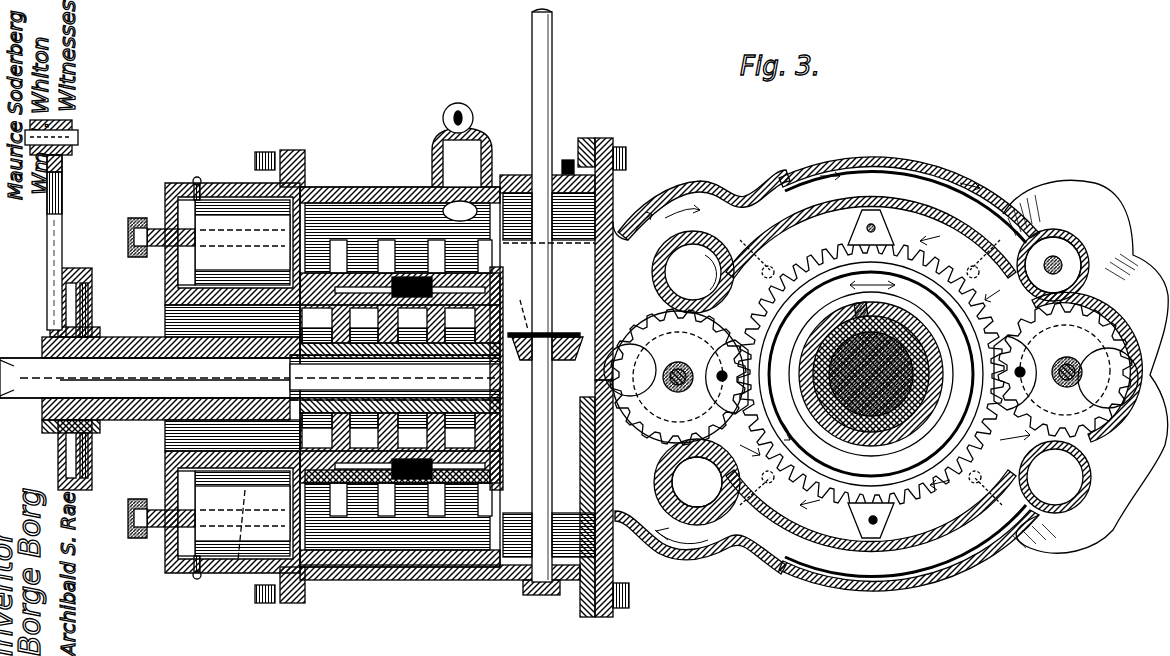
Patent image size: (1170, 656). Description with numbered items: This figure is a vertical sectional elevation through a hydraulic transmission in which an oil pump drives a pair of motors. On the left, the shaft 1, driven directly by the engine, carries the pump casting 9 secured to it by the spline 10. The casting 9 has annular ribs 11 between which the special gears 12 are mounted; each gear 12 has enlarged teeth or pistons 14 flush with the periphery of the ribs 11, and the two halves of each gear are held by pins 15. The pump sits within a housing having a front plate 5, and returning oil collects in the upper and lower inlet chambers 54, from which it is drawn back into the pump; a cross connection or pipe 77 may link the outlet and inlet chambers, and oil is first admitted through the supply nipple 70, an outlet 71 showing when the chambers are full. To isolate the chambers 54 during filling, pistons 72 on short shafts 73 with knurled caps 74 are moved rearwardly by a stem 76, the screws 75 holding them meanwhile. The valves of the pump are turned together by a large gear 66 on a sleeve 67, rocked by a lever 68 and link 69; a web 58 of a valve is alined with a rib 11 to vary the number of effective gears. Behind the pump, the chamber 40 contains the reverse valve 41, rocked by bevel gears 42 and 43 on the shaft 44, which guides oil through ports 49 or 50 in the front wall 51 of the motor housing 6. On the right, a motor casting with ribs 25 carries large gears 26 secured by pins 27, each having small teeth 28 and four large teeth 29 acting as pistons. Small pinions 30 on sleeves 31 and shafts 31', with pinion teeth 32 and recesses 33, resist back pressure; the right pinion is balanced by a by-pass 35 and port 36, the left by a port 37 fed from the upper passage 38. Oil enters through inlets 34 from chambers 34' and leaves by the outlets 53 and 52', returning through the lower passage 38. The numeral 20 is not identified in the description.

The shaft 1 is at (28, 404).
The front plate 5 is at (290, 603).
The motor housing 6 is at (790, 572).
The pump casting 9 is at (280, 300).
The spline 10 is at (290, 366).
The annular ribs 11 is at (415, 458).
The special gears 12 is at (410, 250).
The pistons 14 is at (430, 472).
The pins 15 is at (506, 440).
The rotor vanes 20 is at (312, 285).
The flanges or ribs 25 is at (818, 200).
The motor gears 26 is at (878, 178).
The pins 27 is at (925, 190).
The small teeth 28 is at (940, 260).
The large teeth 29 is at (900, 188).
The small pinions 30 is at (740, 340).
The sleeves 31 is at (662, 428).
The shafts 31' is at (1077, 372).
The pinion teeth 32 is at (1143, 266).
The recesses 33 is at (871, 376).
The oil inlets 34 is at (886, 347).
The chambers 34' is at (917, 398).
The by-pass 35 is at (1125, 320).
The port 36 is at (1128, 420).
The port 37 is at (650, 330).
The passage 38 is at (705, 195).
The chamber 40 is at (520, 580).
The valve 41 is at (618, 215).
The bevel gear 42 is at (540, 320).
The bevel gear 43 is at (575, 410).
The shaft 44 is at (552, 84).
The ports 49 is at (645, 212).
The port 50 is at (582, 580).
The front wall 51 is at (610, 148).
The outlet 52' is at (1055, 477).
The outlet 53 is at (710, 250).
The inlet chambers 54 is at (345, 230).
The web 58 is at (1049, 270).
The large gear 66 is at (80, 270).
The sleeve 67 is at (42, 340).
The lever 68 is at (62, 160).
The link 69 is at (72, 124).
The supply nipple 70 is at (445, 140).
The outlet 71 is at (572, 160).
The pistons 72 is at (172, 195).
The short shafts 73 is at (165, 228).
The knurled caps 74 is at (130, 246).
The screws 75 is at (200, 184).
The stem 76 is at (232, 240).
The cross connection or pipe 77 is at (488, 160).